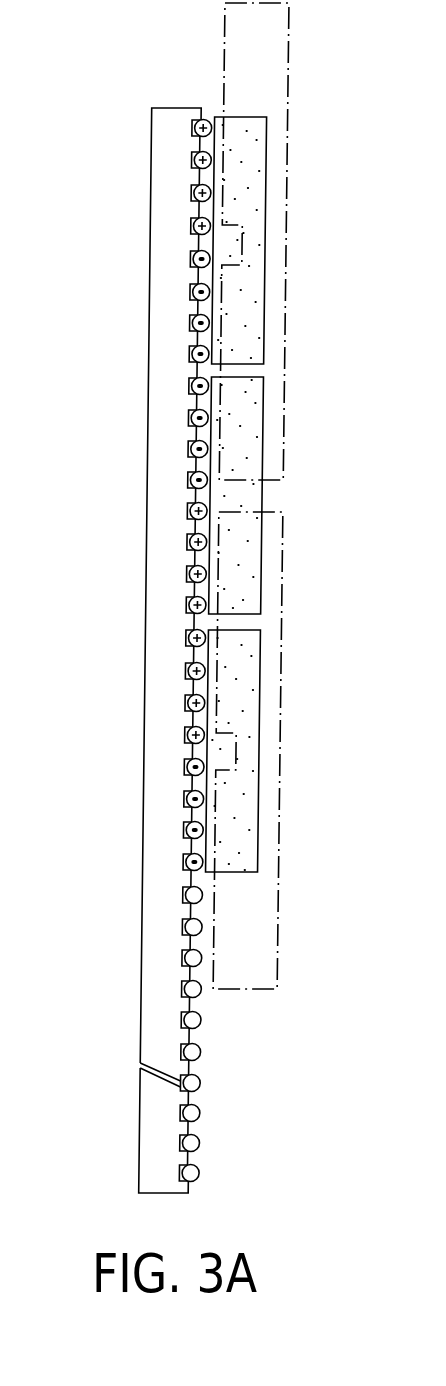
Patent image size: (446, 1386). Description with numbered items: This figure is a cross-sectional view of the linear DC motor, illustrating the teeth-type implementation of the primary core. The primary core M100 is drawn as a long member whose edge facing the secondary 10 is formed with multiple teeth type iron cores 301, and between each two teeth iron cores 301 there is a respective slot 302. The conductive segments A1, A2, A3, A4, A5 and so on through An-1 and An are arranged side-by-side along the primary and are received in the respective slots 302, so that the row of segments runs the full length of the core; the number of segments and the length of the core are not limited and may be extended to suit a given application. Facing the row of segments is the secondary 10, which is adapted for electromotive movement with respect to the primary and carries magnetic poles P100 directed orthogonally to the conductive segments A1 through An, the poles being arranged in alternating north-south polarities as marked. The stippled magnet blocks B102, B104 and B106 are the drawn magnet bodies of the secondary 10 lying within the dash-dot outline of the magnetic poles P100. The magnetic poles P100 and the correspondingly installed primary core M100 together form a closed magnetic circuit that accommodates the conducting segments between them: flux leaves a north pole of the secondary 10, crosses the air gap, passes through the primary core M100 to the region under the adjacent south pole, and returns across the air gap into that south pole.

The secondary 10 is at (308, 70).
The conductive segment A1 is at (196, 127).
The conductive segment A2 is at (196, 160).
The conductive segment A3 is at (196, 193).
The conductive segment A4 is at (196, 226).
The conductive segment A5 is at (196, 259).
The conductive segment An-1 is at (194, 1143).
The conductive segment An is at (197, 1175).
The teeth type iron core 301 is at (196, 310).
The slot 302 is at (196, 352).
The primary core M100 is at (166, 643).
The first magnet block B102 is at (267, 198).
The second magnet block B104 is at (268, 493).
The third magnet block B106 is at (267, 753).
The magnetic pole P100 is at (288, 275).